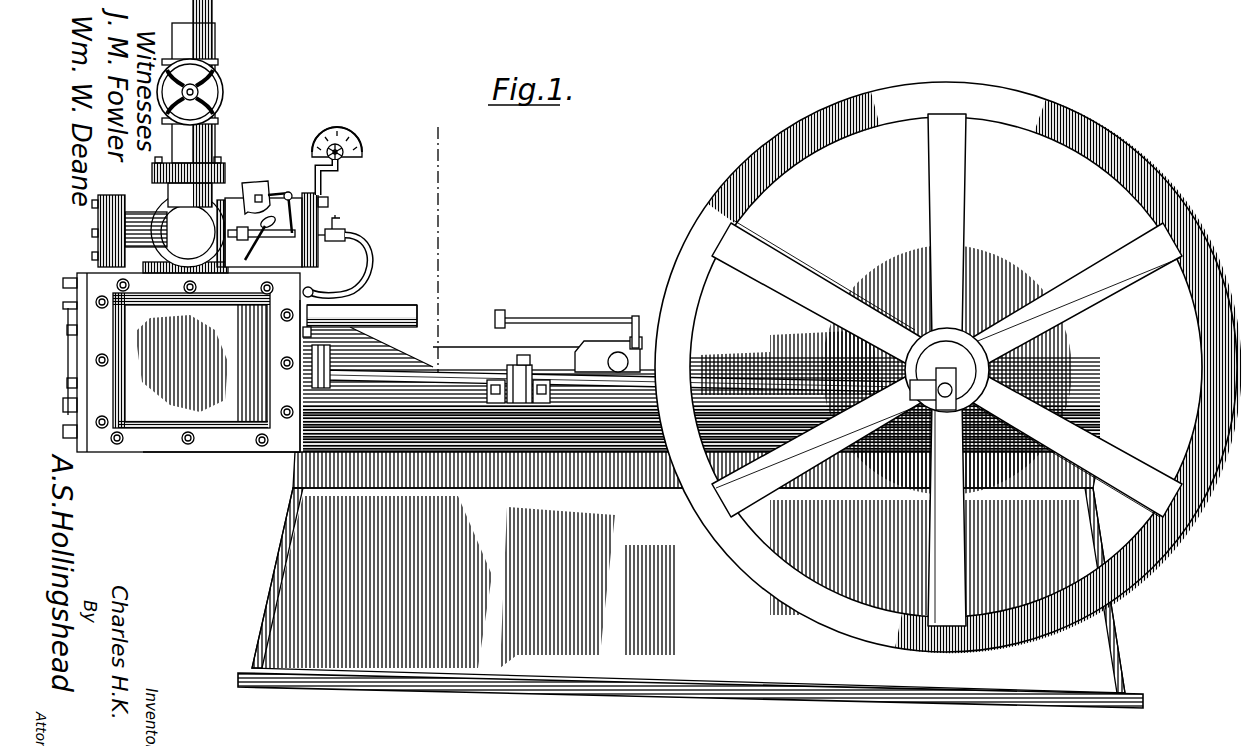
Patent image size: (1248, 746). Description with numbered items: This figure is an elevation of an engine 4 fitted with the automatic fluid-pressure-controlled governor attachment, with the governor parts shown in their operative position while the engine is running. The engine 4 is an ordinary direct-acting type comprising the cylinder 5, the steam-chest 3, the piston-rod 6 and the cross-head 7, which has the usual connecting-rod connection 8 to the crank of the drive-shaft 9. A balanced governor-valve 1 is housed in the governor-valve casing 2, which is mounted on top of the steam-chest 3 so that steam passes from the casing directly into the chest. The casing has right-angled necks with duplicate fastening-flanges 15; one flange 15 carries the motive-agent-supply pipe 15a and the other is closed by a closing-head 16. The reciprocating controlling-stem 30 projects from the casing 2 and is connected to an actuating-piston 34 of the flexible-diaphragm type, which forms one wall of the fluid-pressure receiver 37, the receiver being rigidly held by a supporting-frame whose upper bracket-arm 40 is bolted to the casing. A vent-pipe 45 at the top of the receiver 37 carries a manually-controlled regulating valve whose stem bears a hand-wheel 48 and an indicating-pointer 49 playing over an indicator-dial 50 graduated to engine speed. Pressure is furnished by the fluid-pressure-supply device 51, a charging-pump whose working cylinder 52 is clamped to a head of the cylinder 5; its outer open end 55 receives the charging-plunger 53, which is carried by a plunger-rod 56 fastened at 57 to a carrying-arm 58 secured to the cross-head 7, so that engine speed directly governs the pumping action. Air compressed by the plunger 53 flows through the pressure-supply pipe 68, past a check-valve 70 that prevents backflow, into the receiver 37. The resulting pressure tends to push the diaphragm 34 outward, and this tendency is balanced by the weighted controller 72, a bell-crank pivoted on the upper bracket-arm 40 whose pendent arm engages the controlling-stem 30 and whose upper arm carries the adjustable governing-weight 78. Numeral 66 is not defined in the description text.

The balanced governor-valve 1 is at (690, 517).
The governor-valve casing 2 is at (185, 233).
The steam-chest 3 is at (219, 452).
The engine 4 is at (492, 248).
The cylinder 5 is at (169, 362).
The piston-rod 6 is at (506, 342).
The cross-head 7 is at (607, 356).
The connecting-rod connection 8 is at (718, 357).
The drive-shaft 9 is at (947, 370).
The fastening-flange 15 is at (152, 175).
The motive-agent-supply pipe 15a is at (216, 42).
The closing-head 16 is at (178, 270).
The controlling-stem 30 is at (261, 241).
The actuating-piston 34 is at (288, 376).
The fluid-pressure receiver 37 is at (322, 213).
The upper bracket-arm 40 is at (228, 198).
The vent-pipe 45 is at (330, 181).
The hand-wheel 48 is at (349, 156).
The indicating-pointer 49 is at (337, 134).
The indicator-dial 50 is at (347, 139).
The fluid-pressure-supply device 51 is at (360, 310).
The working cylinder 52 is at (362, 294).
The charging-plunger 53 is at (504, 309).
The outer open end 55 is at (420, 318).
The plunger-rod 56 is at (570, 312).
The fastening 57 is at (645, 322).
The carrying-arm 58 is at (630, 331).
The eccentric 66 is at (269, 237).
The pressure-supply pipe 68 is at (345, 266).
The check-valve 70 is at (338, 243).
The weighted controller 72 is at (280, 205).
The governing-weight 78 is at (256, 190).